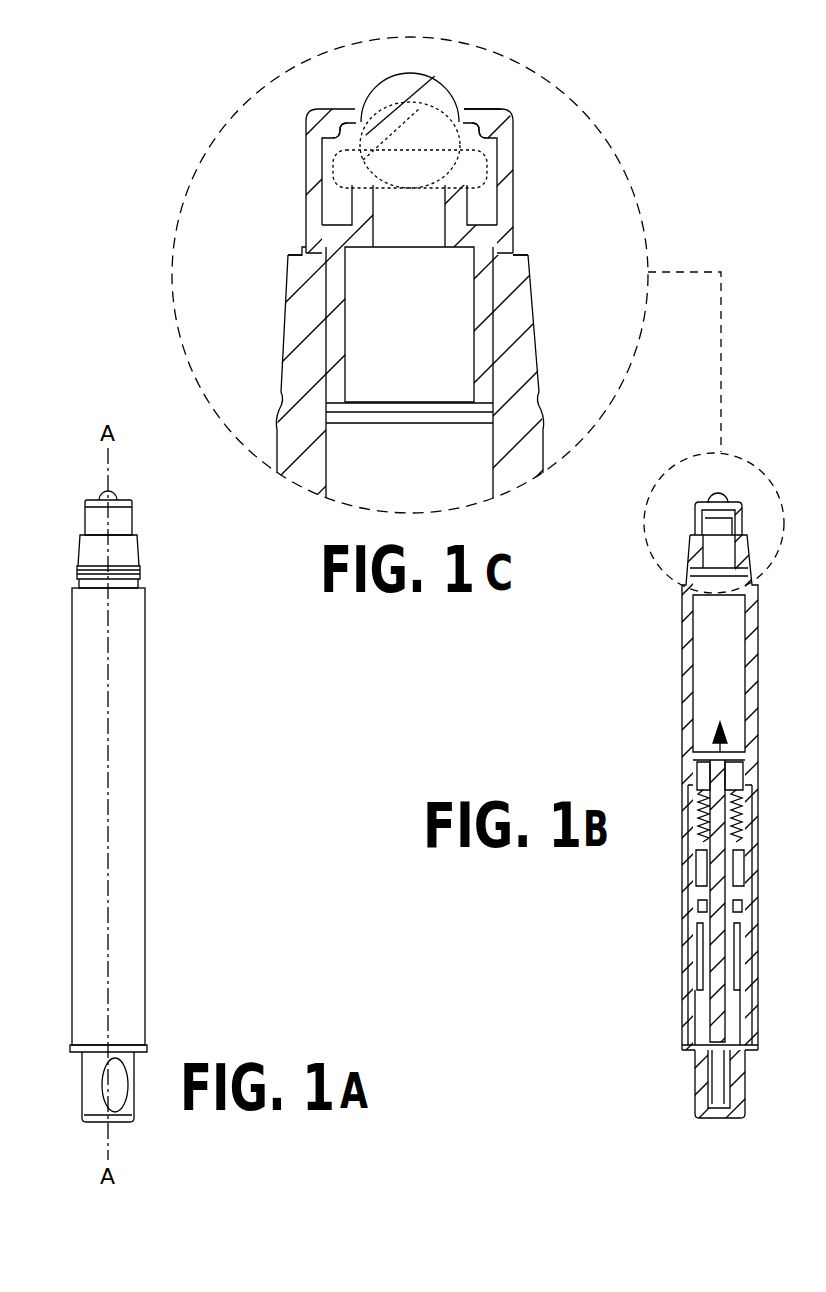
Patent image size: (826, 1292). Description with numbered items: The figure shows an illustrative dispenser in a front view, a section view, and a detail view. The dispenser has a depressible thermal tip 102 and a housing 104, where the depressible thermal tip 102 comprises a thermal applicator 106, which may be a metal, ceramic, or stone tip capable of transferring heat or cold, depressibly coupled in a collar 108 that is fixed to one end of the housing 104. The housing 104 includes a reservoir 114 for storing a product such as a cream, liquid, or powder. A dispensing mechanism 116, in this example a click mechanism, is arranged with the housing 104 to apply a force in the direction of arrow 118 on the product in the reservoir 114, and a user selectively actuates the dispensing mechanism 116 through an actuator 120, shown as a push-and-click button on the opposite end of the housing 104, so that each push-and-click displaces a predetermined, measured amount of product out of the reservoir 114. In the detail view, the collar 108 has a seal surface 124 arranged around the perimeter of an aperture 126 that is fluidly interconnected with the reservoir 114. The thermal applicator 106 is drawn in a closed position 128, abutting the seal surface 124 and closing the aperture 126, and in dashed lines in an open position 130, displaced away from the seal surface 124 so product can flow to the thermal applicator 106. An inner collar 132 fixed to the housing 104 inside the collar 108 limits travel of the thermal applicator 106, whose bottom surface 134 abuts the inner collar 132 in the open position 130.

In FIG. 1A, the depressible thermal tip 102 is at (150, 488).
In FIG. 1C, the housing 104 is at (286, 333).
In FIG. 1A, the housing 104 is at (148, 537).
In FIG. 1C, the thermal applicator 106 is at (370, 82).
In FIG. 1A, the thermal applicator 106 is at (100, 492).
In FIG. 1C, the collar 108 is at (318, 197).
In FIG. 1A, the collar 108 is at (88, 503).
In FIG. 1B, the reservoir 114 is at (673, 595).
In FIG. 1B, the dispensing mechanism 116 is at (673, 765).
In FIG. 1B, the arrow 118 is at (712, 722).
In FIG. 1B, the actuator 120 is at (695, 1118).
In FIG. 1C, the seal surface 124 is at (378, 187).
In FIG. 1C, the aperture 126 is at (470, 102).
In FIG. 1C, the closed position 128 is at (362, 114).
In FIG. 1C, the open position 130 is at (336, 172).
In FIG. 1C, the inner collar 132 is at (360, 250).
In FIG. 1C, the bottom surface 134 is at (467, 152).